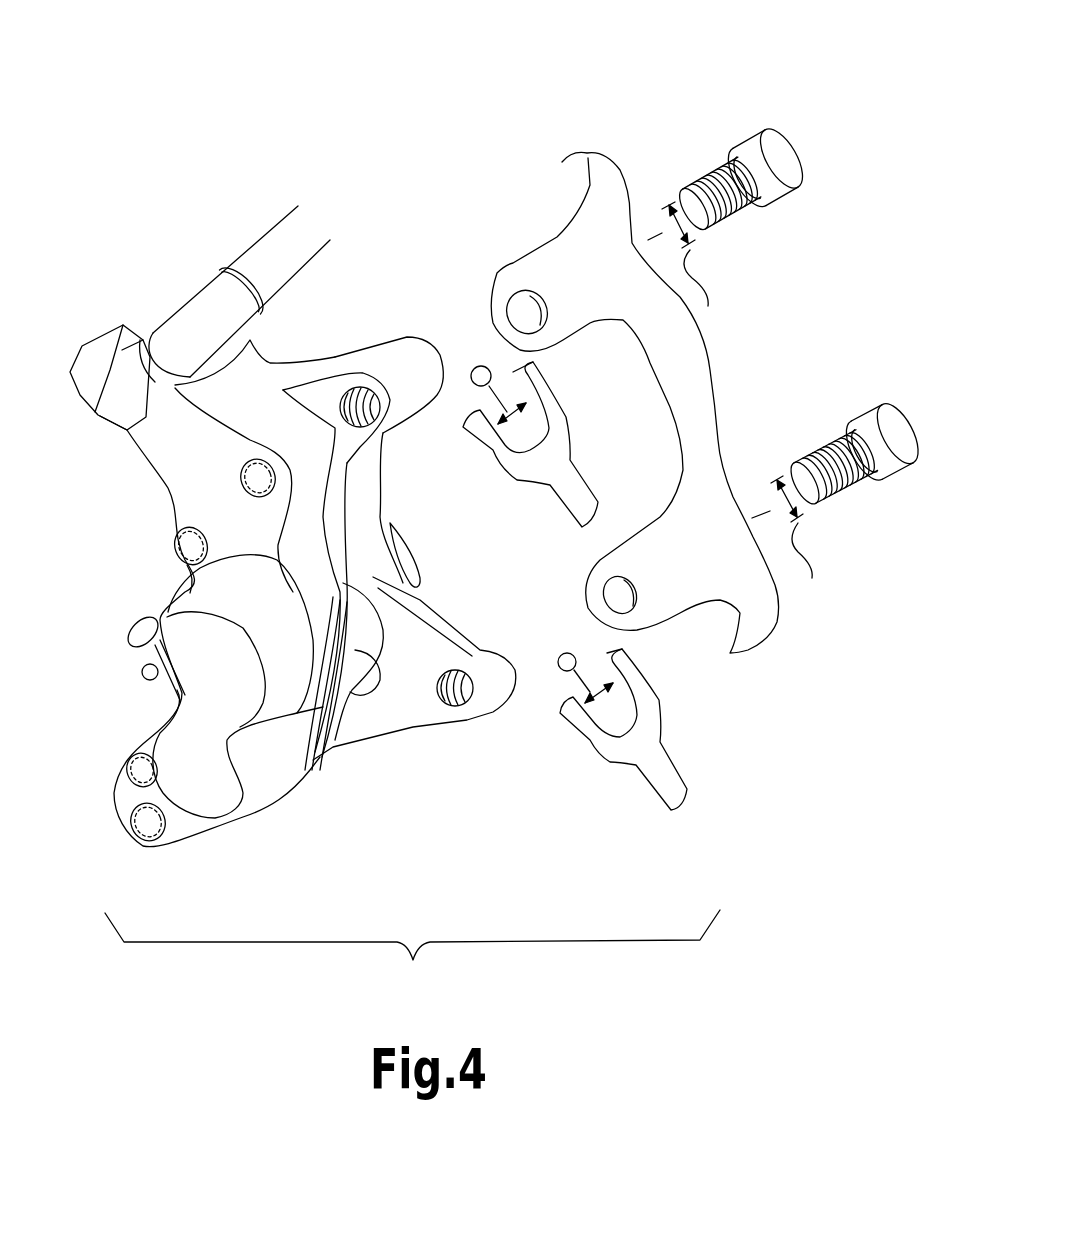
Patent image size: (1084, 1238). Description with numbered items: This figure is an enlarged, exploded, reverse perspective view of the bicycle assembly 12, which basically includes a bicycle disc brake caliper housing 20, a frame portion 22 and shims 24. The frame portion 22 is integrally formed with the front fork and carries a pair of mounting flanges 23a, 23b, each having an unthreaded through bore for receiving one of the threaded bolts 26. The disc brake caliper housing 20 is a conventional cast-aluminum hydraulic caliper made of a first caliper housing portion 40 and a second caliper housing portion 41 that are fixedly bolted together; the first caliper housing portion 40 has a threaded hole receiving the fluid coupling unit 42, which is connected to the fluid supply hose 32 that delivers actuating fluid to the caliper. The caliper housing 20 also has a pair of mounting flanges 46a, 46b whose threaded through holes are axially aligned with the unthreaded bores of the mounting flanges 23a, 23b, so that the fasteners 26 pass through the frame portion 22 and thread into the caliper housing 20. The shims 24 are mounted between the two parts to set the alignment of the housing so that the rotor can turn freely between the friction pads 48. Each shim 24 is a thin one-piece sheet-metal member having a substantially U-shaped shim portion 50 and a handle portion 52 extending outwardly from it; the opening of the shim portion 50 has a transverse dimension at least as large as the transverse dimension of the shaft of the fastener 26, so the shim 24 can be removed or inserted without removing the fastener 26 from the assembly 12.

The bicycle assembly 12 is at (477, 112).
The disc brake caliper housing 20 is at (131, 578).
The frame portion 22 is at (616, 389).
The mounting flange 23a is at (520, 268).
The mounting flange 23b is at (663, 620).
The shim 24 is at (616, 618).
The threaded bolt 26 is at (805, 170).
The fluid supply hose 32 is at (270, 228).
The first caliper housing portion 40 is at (140, 465).
The second caliper housing portion 41 is at (272, 353).
The fluid coupling unit 42 is at (158, 328).
The mounting flange 46a is at (366, 345).
The mounting flange 46b is at (413, 727).
The friction pads 48 is at (316, 762).
The shim portion 50 is at (483, 455).
The handle portion 52 is at (557, 505).